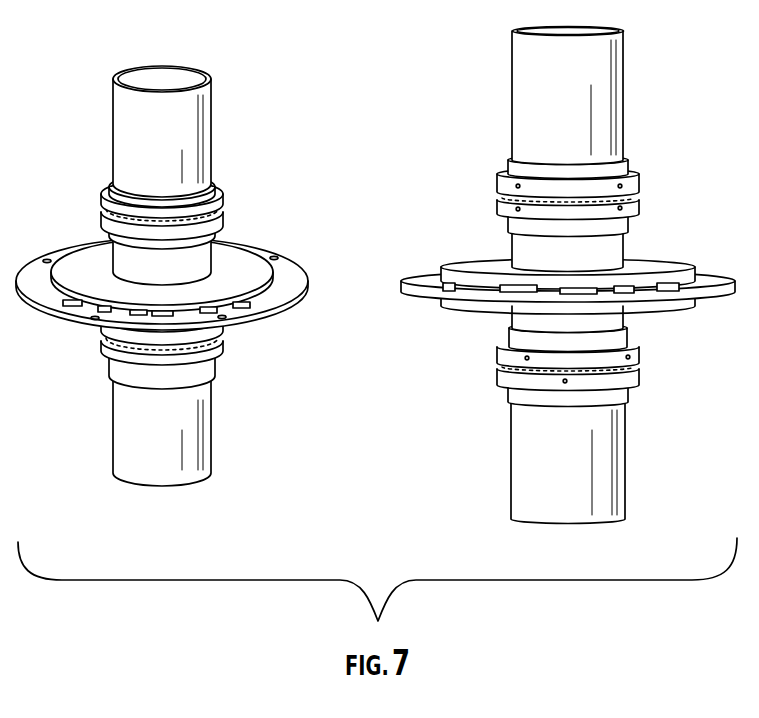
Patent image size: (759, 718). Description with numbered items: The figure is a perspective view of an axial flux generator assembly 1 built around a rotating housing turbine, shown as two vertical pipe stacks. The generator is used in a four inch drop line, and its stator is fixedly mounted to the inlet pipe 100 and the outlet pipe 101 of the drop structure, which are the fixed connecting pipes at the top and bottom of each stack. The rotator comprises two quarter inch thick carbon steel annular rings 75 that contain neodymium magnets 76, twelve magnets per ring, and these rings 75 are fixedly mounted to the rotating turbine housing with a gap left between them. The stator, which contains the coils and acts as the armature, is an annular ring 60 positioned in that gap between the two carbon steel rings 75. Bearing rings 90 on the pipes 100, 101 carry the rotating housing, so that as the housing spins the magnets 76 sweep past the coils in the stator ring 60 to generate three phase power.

The pipe coupling assembly 1 is at (468, 228).
The annular ring 60 is at (290, 310).
The carbon steel annular rings 75 is at (237, 263).
The neodymium magnets 76 is at (151, 321).
The bearing ring 90 is at (640, 192).
The inlet pipe 100 is at (211, 150).
The outlet pipe 101 is at (212, 430).